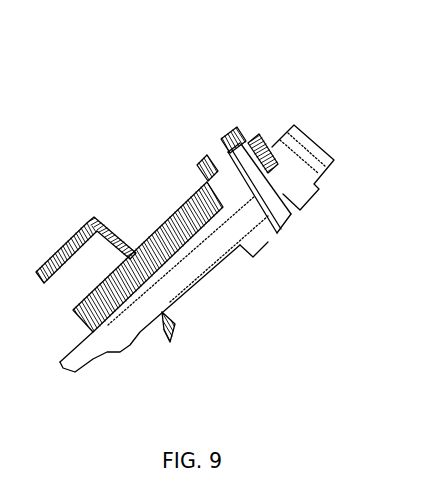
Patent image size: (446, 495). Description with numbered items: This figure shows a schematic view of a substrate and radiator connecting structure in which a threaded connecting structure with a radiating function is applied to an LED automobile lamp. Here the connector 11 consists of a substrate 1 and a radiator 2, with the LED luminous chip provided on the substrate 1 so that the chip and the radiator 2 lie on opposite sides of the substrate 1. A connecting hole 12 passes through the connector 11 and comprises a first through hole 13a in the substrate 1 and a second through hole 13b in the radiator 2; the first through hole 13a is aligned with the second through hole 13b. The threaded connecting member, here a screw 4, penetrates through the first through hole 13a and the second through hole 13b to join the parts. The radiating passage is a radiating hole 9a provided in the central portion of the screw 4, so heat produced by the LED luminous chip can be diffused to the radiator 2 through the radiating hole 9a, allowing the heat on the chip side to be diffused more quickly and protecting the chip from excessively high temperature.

The substrate 1 is at (170, 228).
The radiator 2 is at (200, 268).
The screw 4 is at (238, 130).
The radiating hole 9a is at (225, 160).
The connector 11 is at (166, 326).
The connecting hole 12 is at (266, 256).
The first through hole 13a is at (262, 135).
The second through hole 13b is at (315, 150).